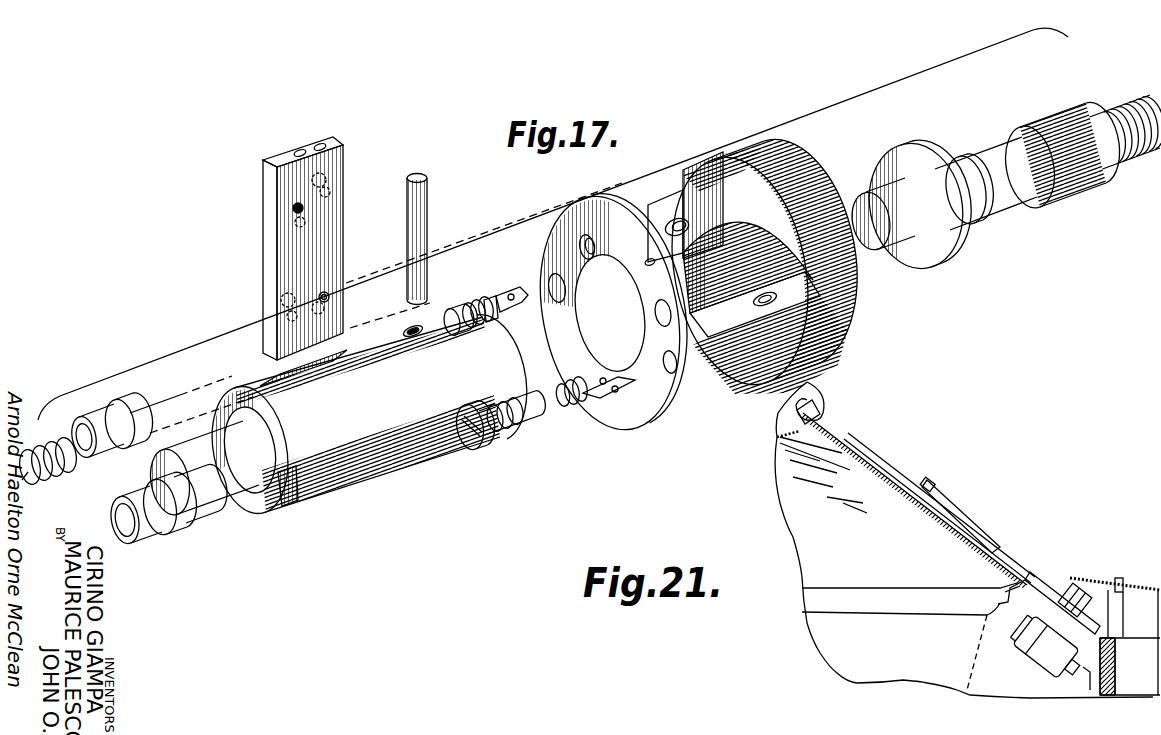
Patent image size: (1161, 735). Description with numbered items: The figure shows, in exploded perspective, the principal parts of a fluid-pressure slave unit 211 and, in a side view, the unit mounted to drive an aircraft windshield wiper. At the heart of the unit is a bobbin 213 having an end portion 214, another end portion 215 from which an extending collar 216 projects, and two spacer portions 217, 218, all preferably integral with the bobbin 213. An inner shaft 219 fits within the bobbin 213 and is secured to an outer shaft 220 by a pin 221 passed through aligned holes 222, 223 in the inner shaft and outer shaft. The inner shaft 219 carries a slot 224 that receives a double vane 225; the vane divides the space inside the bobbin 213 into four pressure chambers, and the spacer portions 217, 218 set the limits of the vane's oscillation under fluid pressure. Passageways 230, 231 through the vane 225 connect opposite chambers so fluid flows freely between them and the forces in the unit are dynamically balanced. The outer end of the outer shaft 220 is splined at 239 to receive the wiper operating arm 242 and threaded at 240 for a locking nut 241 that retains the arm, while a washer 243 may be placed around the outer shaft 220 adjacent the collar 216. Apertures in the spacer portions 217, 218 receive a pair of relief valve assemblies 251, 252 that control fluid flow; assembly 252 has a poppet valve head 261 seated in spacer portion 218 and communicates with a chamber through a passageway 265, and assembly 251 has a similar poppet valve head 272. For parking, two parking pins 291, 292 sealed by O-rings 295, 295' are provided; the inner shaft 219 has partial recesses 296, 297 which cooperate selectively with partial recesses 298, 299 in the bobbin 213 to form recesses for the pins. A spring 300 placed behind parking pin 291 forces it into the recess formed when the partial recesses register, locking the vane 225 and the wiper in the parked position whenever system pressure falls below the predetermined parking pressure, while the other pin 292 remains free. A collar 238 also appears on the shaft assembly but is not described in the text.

In FIG. 17, the slave unit 211 is at (660, 172).
In FIG. 21, the slave unit 211 is at (1040, 658).
In FIG. 17, the bobbin 213 is at (734, 275).
In FIG. 17, the end portion 214 is at (602, 312).
In FIG. 17, the end portion 215 is at (775, 177).
In FIG. 17, the extending collar 216 is at (813, 192).
In FIG. 17, the spacer portion 217 is at (672, 217).
In FIG. 17, the spacer portion 218 is at (728, 387).
In FIG. 17, the inner shaft 219 is at (364, 417).
In FIG. 17, the outer shaft 220 is at (986, 172).
In FIG. 17, the pin 221 is at (416, 176).
In FIG. 17, the hole 222 is at (412, 328).
In FIG. 17, the hole 223 is at (870, 185).
In FIG. 17, the slot 224 is at (270, 377).
In FIG. 17, the double vane 225 is at (300, 230).
In FIG. 17, the passageway 230 is at (326, 294).
In FIG. 17, the passageway 231 is at (282, 231).
In FIG. 17, the collar 238 is at (974, 222).
In FIG. 17, the splined portion 239 is at (1034, 127).
In FIG. 17, the threaded portion 240 is at (1100, 112).
In FIG. 21, the locking nut 241 is at (1087, 577).
In FIG. 21, the operating arm 242 is at (1000, 527).
In FIG. 17, the washer 243 is at (900, 148).
In FIG. 17, the relief valve assembly 251 is at (442, 306).
In FIG. 17, the relief valve assembly 252 is at (542, 430).
In FIG. 17, the poppet valve head 261 is at (590, 410).
In FIG. 17, the passageway 265 is at (769, 287).
In FIG. 17, the poppet valve head 272 is at (497, 287).
In FIG. 17, the parking pin 291 is at (117, 413).
In FIG. 17, the parking pin 292 is at (149, 504).
In FIG. 17, the O-ring 295 is at (122, 417).
In FIG. 17, the O-ring 295' is at (153, 501).
In FIG. 17, the partial recess 296 is at (284, 504).
In FIG. 17, the partial recess 297 is at (200, 440).
In FIG. 17, the partial recess 298 is at (656, 322).
In FIG. 17, the partial recess 299 is at (578, 246).
In FIG. 17, the spring 300 is at (40, 440).